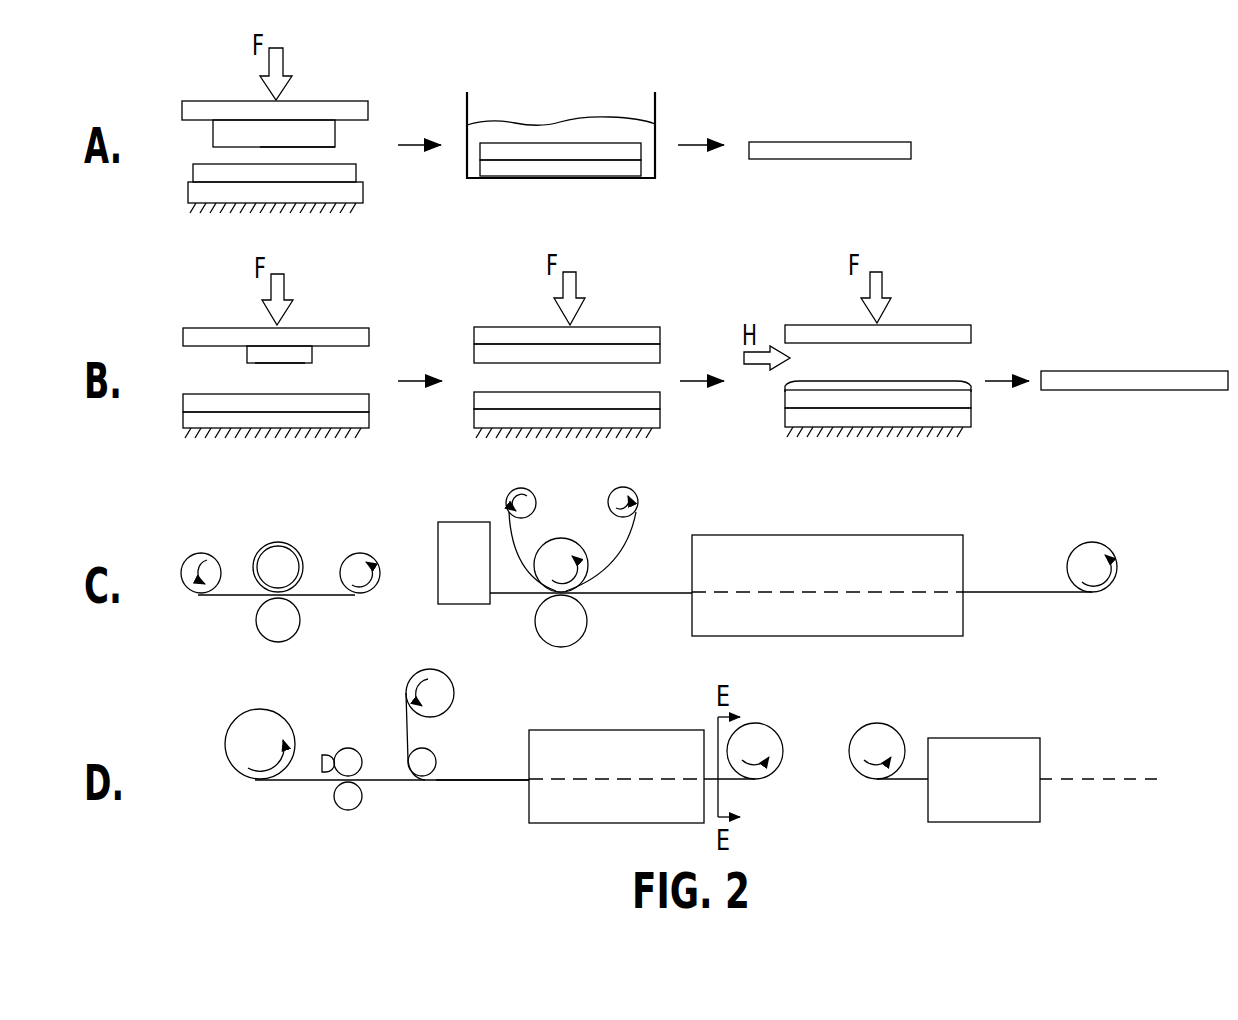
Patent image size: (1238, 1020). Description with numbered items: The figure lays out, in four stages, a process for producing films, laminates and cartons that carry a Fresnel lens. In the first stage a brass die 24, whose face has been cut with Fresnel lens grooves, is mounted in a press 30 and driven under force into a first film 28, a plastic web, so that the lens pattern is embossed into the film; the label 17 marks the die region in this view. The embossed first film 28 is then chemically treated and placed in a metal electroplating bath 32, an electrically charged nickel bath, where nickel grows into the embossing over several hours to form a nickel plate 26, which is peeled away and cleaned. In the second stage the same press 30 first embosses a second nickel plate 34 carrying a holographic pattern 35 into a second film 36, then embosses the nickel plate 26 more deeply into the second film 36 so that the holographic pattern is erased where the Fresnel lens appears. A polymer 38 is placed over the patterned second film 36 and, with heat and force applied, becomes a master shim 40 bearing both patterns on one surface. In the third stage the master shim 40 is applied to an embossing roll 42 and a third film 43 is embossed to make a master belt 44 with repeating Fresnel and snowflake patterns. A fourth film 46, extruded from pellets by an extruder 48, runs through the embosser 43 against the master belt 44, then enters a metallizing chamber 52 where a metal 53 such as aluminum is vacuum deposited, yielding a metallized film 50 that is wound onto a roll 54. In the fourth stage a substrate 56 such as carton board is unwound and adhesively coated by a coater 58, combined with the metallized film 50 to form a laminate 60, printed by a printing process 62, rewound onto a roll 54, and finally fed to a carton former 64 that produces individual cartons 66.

In FIG. 2A, the release layer 17 is at (317, 147).
In FIG. 2A, the brass die 24 is at (222, 127).
In FIG. 2A, the nickel plate 26 is at (590, 150).
In FIG. 2B, the nickel plate 26 is at (650, 353).
In FIG. 2A, the first film 28 is at (200, 172).
In FIG. 2A, the press 30 is at (180, 92).
In FIG. 2B, the press 30 is at (182, 317).
In FIG. 2A, the metal electroplating bath 32 is at (516, 127).
In FIG. 2B, the second nickel plate 34 is at (246, 353).
In FIG. 2B, the holographic pattern 35 is at (268, 364).
In FIG. 2B, the second film 36 is at (348, 400).
In FIG. 2B, the polymer 38 is at (922, 385).
In FIG. 2B, the master shim 40 is at (1077, 378).
In FIG. 2C, the master shim 40 is at (295, 548).
In FIG. 2C, the embossing roll 42 is at (292, 580).
In FIG. 2C, the third film 43 is at (243, 547).
In FIG. 2C, the master belt 44 is at (348, 597).
In FIG. 2C, the fourth film 46 is at (517, 595).
In FIG. 2C, the extruder 48 is at (453, 535).
In FIG. 2C, the metallized film 50 is at (1035, 595).
In FIG. 2D, the metallized film 50 is at (405, 732).
In FIG. 2C, the metallizing chamber 52 is at (770, 558).
In FIG. 2C, the metal 53 is at (875, 592).
In FIG. 2C, the roll 54 is at (1092, 542).
In FIG. 2D, the roll 54 is at (448, 688).
In FIG. 2D, the substrate 56 is at (295, 782).
In FIG. 2D, the coater 58 is at (340, 742).
In FIG. 2D, the laminate 60 is at (480, 782).
In FIG. 2D, the printing process 62 is at (573, 738).
In FIG. 2D, the carton former 64 is at (1012, 742).
In FIG. 2D, the cartons 66 is at (1108, 778).